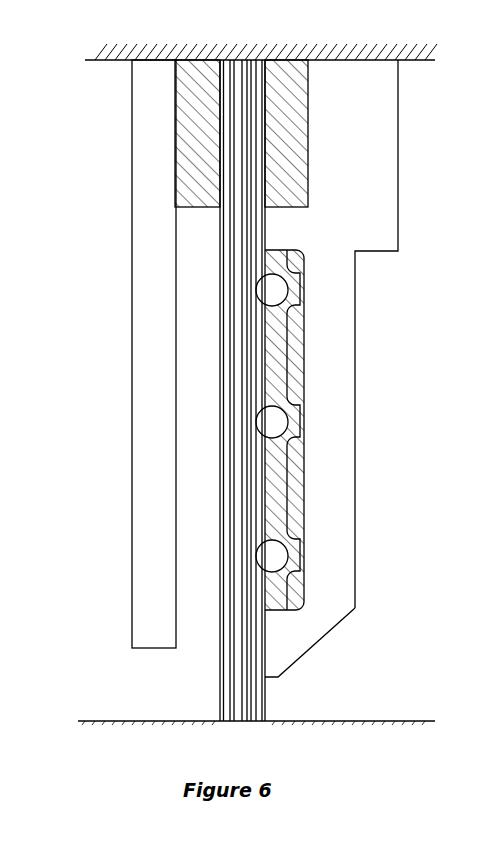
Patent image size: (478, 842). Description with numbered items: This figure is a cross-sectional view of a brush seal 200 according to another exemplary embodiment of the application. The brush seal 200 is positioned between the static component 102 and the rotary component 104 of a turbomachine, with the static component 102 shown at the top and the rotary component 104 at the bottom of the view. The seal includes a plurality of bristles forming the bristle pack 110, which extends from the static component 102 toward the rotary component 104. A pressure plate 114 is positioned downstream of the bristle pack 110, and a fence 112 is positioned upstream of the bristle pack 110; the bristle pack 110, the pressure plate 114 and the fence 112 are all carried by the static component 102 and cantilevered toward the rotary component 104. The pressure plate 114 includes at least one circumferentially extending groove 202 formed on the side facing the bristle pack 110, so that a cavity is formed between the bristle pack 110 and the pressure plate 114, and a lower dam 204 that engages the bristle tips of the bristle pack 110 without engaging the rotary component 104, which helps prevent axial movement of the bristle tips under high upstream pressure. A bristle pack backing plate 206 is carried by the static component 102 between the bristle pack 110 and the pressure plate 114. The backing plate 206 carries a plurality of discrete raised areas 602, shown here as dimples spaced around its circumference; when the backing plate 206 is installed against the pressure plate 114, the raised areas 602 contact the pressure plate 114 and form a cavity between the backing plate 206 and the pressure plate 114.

The static component 102 is at (108, 61).
The rotary component 104 is at (105, 720).
The bristle pack 110 is at (236, 215).
The fence 112 is at (141, 126).
The pressure plate 114 is at (387, 140).
The brush seal 200 is at (352, 648).
The circumferentially extending groove 202 is at (338, 430).
The lower dam 204 is at (270, 652).
The bristle pack backing plate 206 is at (292, 487).
The raised areas 602 is at (272, 560).